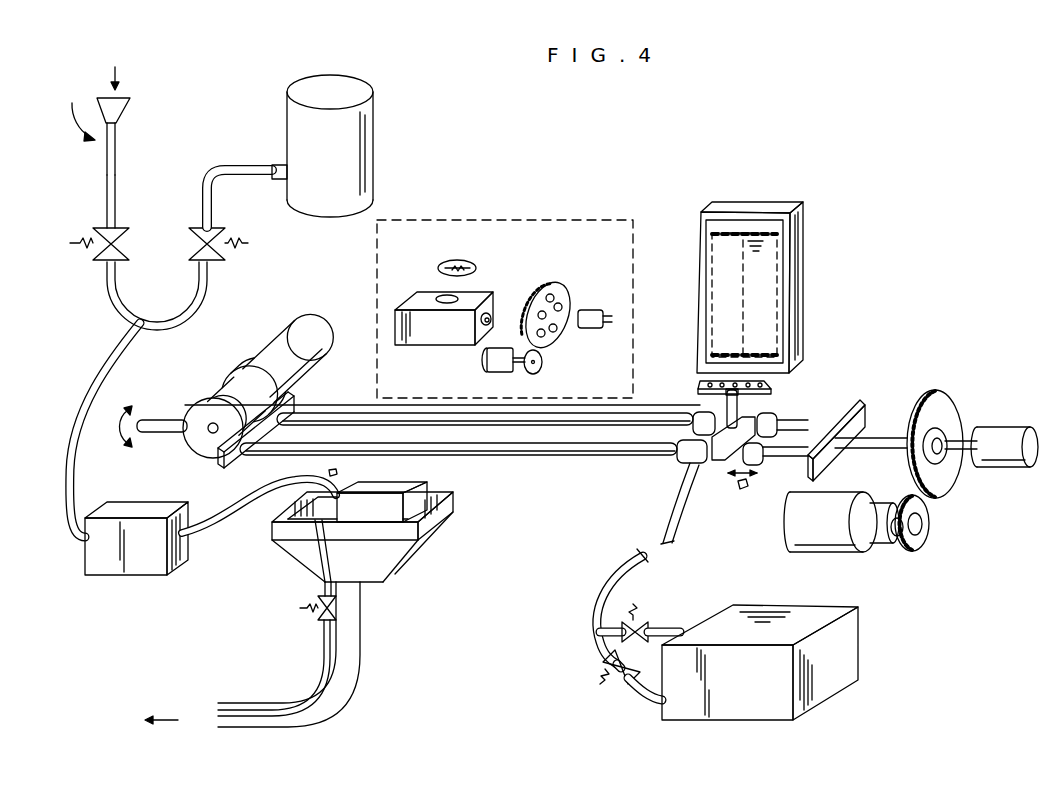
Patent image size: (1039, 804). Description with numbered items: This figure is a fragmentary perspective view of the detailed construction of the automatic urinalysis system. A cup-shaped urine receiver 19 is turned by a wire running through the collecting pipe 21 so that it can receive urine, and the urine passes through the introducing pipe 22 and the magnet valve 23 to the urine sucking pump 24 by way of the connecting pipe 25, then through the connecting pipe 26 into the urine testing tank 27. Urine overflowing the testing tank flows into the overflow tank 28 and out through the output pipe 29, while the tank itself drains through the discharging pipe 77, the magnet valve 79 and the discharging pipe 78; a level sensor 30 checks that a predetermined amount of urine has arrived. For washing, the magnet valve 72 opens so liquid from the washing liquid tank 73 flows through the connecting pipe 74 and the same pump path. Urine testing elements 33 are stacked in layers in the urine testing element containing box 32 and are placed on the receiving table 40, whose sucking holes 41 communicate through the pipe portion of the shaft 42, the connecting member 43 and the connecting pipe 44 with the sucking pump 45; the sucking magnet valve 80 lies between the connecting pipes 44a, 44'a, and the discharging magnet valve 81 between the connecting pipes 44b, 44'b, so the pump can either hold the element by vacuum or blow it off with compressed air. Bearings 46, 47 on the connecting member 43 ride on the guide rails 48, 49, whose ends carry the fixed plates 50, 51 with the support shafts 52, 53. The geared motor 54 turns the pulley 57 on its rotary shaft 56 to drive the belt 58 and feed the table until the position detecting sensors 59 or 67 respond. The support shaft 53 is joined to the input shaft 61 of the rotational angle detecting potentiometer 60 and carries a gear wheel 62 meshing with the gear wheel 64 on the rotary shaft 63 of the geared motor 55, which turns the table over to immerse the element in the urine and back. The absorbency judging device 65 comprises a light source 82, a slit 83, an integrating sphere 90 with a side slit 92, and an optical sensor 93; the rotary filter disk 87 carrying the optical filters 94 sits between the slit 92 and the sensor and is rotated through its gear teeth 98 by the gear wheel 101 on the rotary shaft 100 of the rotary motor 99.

The urine receiver 19 is at (128, 108).
The collecting pipe 21 is at (118, 160).
The introducing pipe 22 is at (118, 190).
The magnet valve 23 is at (126, 243).
The magnet valve 72 is at (212, 232).
The connecting pipe 74 is at (241, 168).
The washing liquid tank 73 is at (374, 140).
The connecting pipe 25 is at (125, 352).
The urine sucking pump 24 is at (140, 562).
The connecting pipe 26 is at (245, 503).
The support shaft 52 is at (165, 418).
The pulley 57 is at (192, 445).
The rotary shaft 56 is at (212, 434).
The geared motor 54 is at (313, 330).
The fixed plate 50 is at (240, 452).
The belt 58 is at (645, 404).
The guide rail 48 is at (540, 427).
The guide rail 49 is at (590, 457).
The bearing 47 is at (690, 464).
The bearing 46 is at (762, 456).
The connecting member 43 is at (728, 450).
The position detecting sensor 67 is at (743, 491).
The sucking holes 41 is at (770, 385).
The urine testing element receiving table 40 is at (740, 395).
The shaft 42 is at (727, 400).
The urine testing element containing box 32 is at (770, 206).
The urine testing element 33 is at (775, 235).
The fixed plate 51 is at (860, 402).
The support shaft 53 is at (876, 438).
The gear wheel 62 is at (940, 396).
The input shaft 61 is at (965, 441).
The rotational angle detecting potentiometer 60 is at (1005, 427).
The geared motor 55 is at (830, 553).
The rotary shaft 63 is at (895, 540).
The gear wheel 64 is at (920, 550).
The absorbency judging device 65 is at (570, 220).
The integrating sphere 90 is at (415, 305).
The slit 83 is at (458, 297).
The slit 92 is at (490, 318).
The light source 82 is at (452, 262).
The rotary filter disk 87 is at (565, 290).
The gear teeth 98 is at (552, 283).
The optical filters 94 is at (561, 305).
The optical sensor 93 is at (593, 328).
The rotary motor 99 is at (485, 360).
The rotary shaft 100 is at (518, 368).
The gear wheel 101 is at (540, 366).
The overflow tank 28 is at (453, 510).
The urine testing tank 27 is at (400, 490).
The position detecting sensor 59 is at (340, 472).
The level sensor 30 is at (300, 545).
The output pipe 29 is at (362, 640).
The discharging pipe 78 is at (330, 668).
The discharging pipe 77 is at (320, 600).
The magnet valve 79 is at (318, 622).
The connecting pipe 44 is at (643, 563).
The connecting pipe 44a is at (618, 622).
The sucking magnet valve 80 is at (645, 626).
The connecting pipe 44'a is at (685, 605).
The connecting pipe 44b is at (595, 632).
The discharging magnet valve 81 is at (600, 672).
The connecting pipe 44'b is at (629, 704).
The urine testing element sucking pump 45 is at (770, 608).